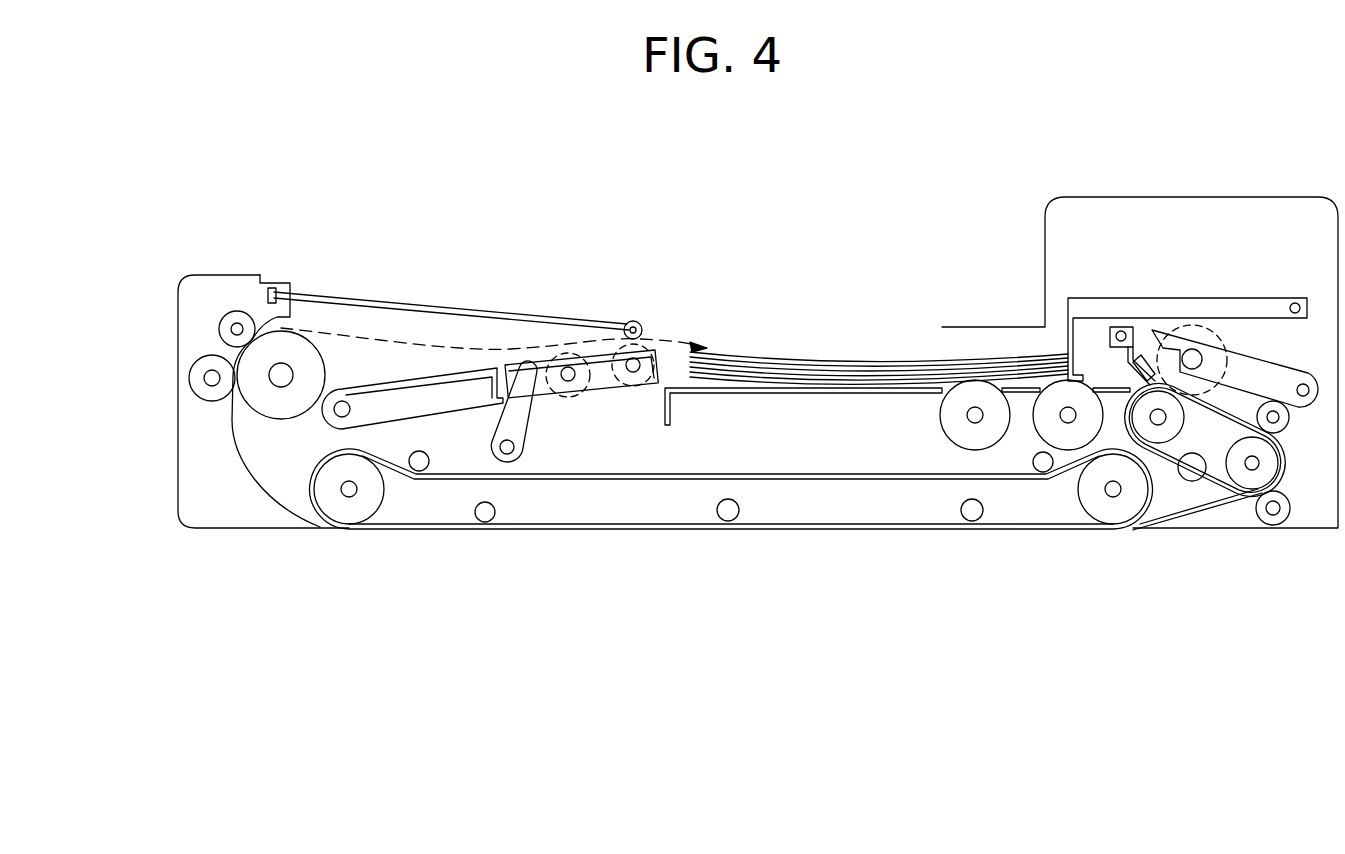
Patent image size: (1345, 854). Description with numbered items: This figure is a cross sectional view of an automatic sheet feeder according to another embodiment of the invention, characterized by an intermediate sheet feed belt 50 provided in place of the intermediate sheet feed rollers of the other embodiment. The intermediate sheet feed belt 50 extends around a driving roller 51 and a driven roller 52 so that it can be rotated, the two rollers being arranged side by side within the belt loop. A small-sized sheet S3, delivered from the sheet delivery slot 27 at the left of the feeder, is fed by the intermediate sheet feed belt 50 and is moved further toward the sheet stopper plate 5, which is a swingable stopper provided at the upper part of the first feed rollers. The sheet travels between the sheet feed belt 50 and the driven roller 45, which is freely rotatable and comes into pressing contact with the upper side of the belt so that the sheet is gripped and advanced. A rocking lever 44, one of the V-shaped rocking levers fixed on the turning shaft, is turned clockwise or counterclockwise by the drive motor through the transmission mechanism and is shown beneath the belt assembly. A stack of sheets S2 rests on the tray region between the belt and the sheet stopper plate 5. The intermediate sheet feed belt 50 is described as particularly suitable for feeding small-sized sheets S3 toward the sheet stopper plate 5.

The sheet delivery slot 27 is at (282, 329).
The small-sized sheet S3 is at (408, 343).
The intermediate sheet feed belt 50 is at (586, 347).
The driven roller 45 is at (634, 320).
The sheet stack S2 is at (808, 362).
The sheet stopper plate 5 is at (1067, 333).
The rocking lever 44 is at (522, 424).
The driven roller 52 is at (580, 386).
The driving roller 51 is at (644, 381).